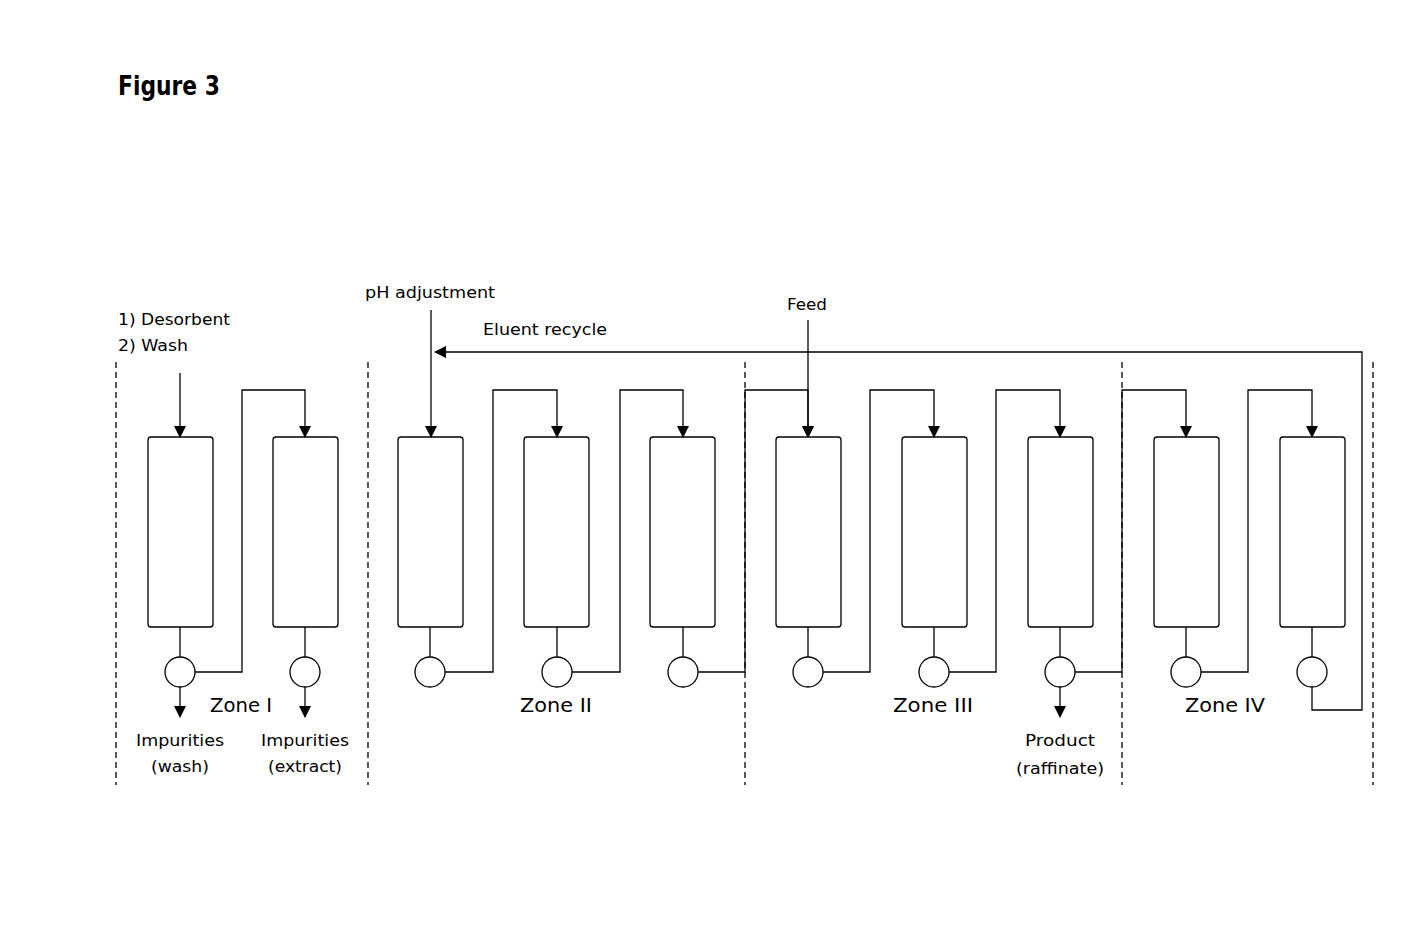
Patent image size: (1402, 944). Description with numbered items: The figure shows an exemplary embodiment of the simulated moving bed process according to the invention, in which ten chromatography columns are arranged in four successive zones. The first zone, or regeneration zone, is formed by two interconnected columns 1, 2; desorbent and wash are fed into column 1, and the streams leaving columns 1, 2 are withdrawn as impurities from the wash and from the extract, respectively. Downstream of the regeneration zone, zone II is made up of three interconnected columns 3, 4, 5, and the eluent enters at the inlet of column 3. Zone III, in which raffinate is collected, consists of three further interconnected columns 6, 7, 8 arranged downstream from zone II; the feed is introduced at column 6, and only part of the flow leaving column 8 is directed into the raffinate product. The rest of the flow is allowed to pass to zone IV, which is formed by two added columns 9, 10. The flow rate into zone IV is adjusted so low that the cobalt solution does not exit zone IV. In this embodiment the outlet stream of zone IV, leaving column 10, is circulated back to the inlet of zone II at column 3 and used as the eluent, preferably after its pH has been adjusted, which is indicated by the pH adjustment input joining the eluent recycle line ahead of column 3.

The column 1 is at (180, 562).
The column 2 is at (305, 562).
The column 3 is at (430, 562).
The column 4 is at (556, 562).
The column 5 is at (682, 562).
The column 6 is at (808, 562).
The column 7 is at (934, 562).
The column 8 is at (1060, 562).
The column 9 is at (1186, 562).
The column 10 is at (1312, 562).